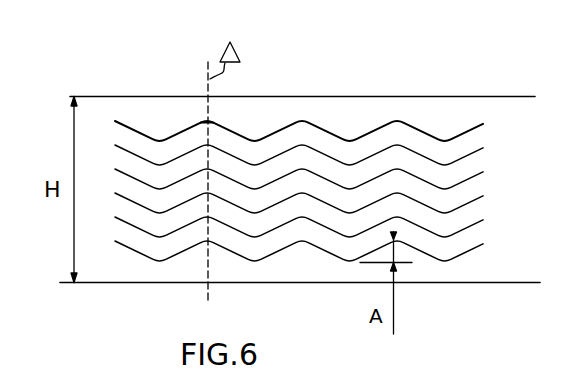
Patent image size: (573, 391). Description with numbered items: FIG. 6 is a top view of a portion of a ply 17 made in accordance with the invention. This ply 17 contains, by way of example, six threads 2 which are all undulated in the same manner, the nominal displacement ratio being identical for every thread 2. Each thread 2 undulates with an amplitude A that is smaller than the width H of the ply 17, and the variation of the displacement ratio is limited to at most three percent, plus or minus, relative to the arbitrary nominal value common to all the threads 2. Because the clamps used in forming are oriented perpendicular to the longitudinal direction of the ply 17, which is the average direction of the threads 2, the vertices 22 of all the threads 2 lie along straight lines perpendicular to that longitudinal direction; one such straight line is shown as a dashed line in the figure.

The ply 17 is at (138, 80).
The thread 2 is at (228, 133).
The vertex 22 is at (198, 115).